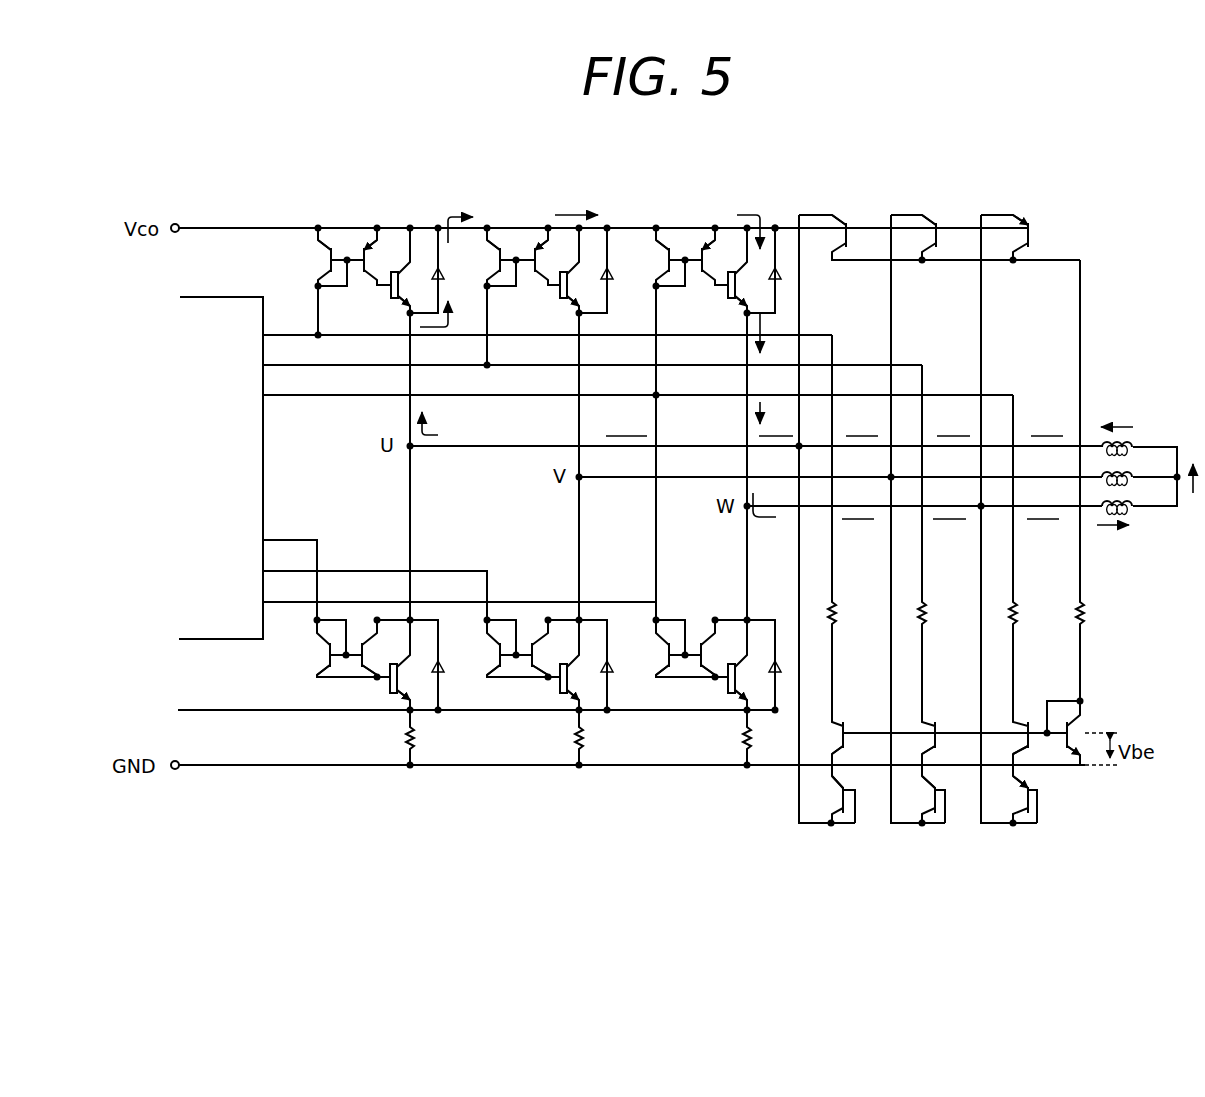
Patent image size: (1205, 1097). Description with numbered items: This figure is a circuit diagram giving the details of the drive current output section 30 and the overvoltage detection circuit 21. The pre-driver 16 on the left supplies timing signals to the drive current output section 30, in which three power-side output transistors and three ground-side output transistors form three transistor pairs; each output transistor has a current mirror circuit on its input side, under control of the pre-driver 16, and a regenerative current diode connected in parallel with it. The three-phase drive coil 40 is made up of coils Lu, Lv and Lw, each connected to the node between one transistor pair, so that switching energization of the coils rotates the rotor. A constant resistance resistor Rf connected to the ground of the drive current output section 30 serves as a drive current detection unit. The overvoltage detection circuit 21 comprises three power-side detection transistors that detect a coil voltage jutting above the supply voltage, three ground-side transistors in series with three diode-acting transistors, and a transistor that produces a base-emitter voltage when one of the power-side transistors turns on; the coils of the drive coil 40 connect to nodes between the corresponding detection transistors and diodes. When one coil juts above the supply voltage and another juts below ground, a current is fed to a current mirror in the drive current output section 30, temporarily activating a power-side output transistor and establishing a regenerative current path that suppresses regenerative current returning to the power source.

The pre-driver 16 is at (210, 297).
The drive current output section 30 is at (757, 185).
The overvoltage detection circuit 21 is at (1067, 185).
The drive coil 40 is at (1163, 420).